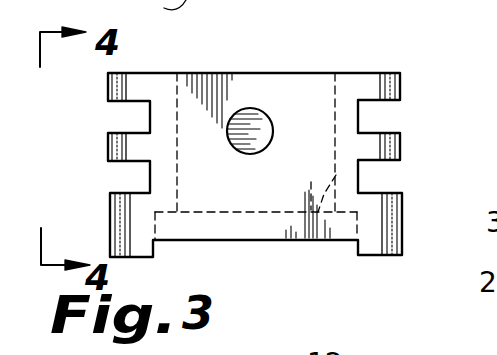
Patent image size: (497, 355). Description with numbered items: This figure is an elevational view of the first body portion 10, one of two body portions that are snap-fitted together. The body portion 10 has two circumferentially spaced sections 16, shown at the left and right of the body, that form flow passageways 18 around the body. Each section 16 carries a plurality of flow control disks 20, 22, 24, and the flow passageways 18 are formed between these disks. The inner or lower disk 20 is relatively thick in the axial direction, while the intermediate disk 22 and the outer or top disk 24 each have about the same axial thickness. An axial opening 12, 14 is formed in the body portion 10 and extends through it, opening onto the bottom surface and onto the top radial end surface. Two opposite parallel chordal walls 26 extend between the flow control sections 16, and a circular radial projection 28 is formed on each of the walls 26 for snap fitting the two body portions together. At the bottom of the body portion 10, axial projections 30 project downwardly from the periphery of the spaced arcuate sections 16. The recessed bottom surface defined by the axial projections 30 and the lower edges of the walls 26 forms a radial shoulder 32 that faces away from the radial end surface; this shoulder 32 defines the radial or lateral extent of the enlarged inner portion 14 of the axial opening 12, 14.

The first body portion 10 is at (397, 0).
The axial opening 12 is at (300, 242).
The enlarged inner portion of the axial opening 14 is at (181, 240).
The flow control section 16 is at (400, 262).
The flow passageway 18 is at (390, 175).
The inner flow control disk 20 is at (403, 213).
The intermediate flow control disk 22 is at (108, 145).
The outer flow control disk 24 is at (108, 90).
The chordal wall 26 is at (320, 110).
The circular radial projection 28 is at (248, 154).
The axial projection 30 is at (357, 247).
The radial shoulder 32 is at (220, 228).